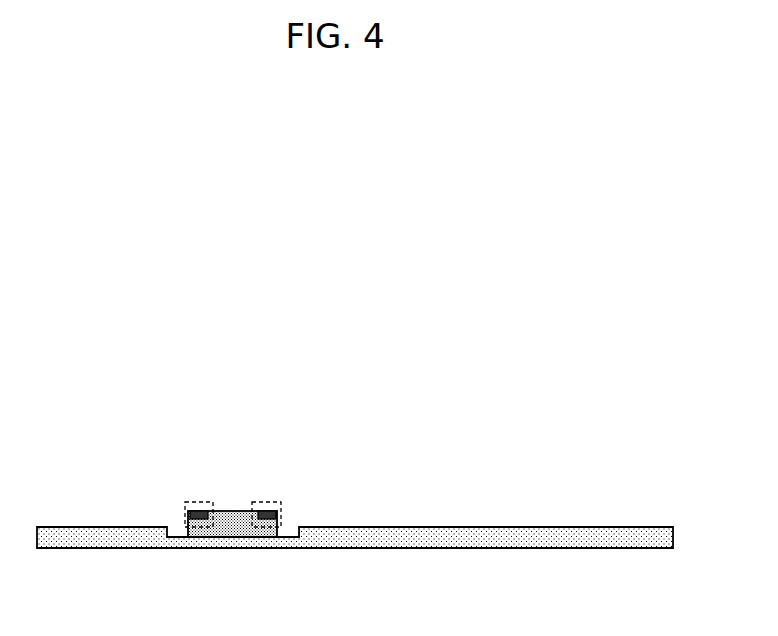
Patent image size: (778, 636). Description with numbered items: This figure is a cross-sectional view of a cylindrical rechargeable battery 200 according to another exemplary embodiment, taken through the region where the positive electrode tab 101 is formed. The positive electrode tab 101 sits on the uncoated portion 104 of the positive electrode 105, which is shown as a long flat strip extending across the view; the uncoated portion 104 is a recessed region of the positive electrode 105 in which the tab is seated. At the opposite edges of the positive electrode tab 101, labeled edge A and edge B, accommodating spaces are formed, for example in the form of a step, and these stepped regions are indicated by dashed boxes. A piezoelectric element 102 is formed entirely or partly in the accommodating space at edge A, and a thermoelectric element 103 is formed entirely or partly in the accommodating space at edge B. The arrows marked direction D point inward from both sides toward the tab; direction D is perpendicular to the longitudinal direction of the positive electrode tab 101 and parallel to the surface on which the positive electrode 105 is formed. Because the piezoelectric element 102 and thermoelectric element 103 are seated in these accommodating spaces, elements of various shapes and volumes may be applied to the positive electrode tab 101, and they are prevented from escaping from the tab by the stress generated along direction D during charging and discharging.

The cylindrical rechargeable battery 200 is at (55, 369).
The positive electrode tab 101 is at (236, 519).
The piezoelectric element 102 is at (189, 511).
The thermoelectric element 103 is at (278, 511).
The uncoated portion 104 is at (291, 538).
The positive electrode 105 is at (495, 537).
The edge A is at (199, 501).
The edge B is at (266, 501).
The direction D is at (155, 517).